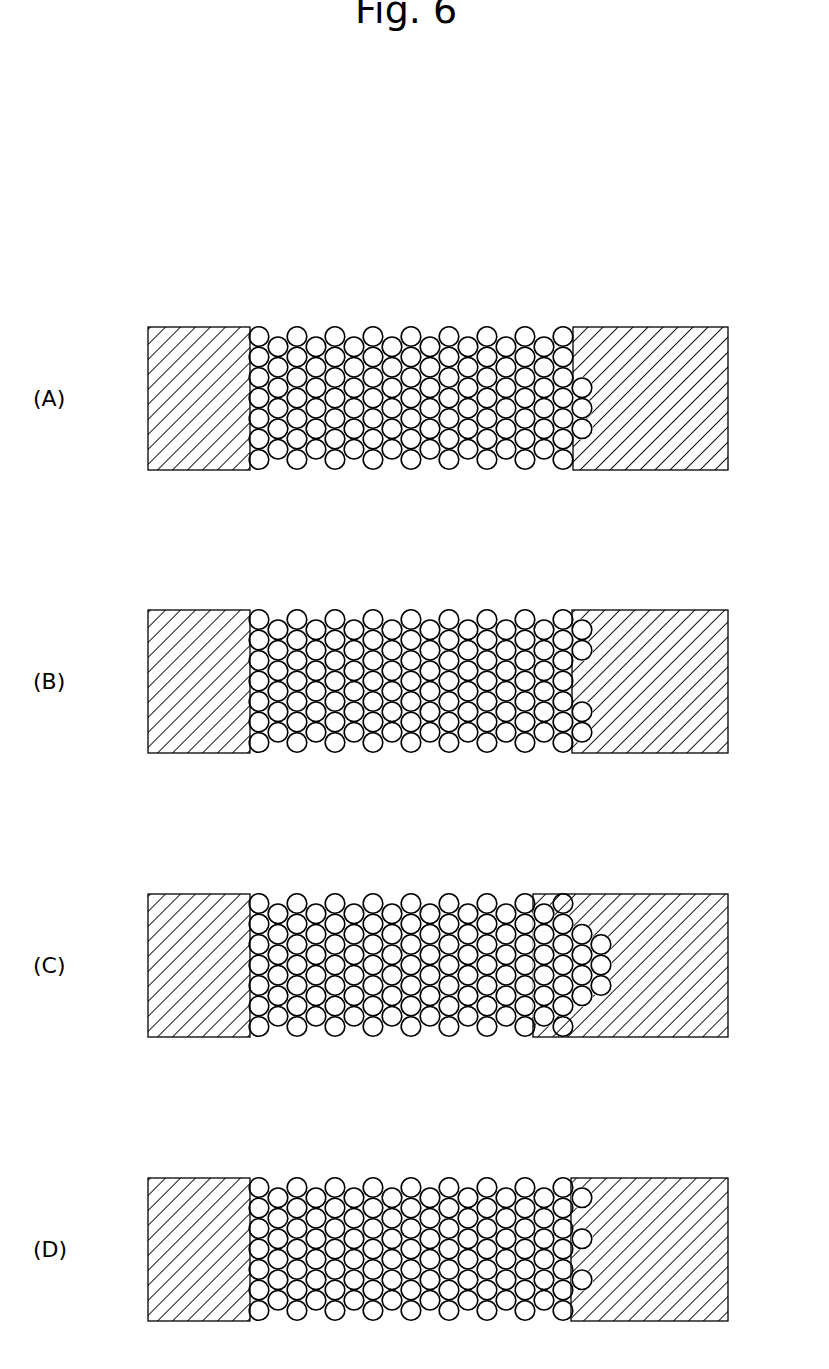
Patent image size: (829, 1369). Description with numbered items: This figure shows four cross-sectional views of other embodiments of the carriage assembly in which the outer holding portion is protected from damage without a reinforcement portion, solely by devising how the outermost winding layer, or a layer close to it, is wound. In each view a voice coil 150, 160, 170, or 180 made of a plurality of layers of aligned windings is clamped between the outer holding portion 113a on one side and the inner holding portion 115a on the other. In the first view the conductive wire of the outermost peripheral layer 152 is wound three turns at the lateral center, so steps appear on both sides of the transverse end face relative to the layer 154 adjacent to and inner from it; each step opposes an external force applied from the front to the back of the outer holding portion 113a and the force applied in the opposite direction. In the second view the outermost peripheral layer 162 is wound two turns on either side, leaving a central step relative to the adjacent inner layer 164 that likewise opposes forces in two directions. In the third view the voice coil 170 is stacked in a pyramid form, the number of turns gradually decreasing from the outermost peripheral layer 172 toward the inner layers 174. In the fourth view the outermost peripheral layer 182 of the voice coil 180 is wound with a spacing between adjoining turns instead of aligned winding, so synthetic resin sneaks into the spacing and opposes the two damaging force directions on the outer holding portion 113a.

The inner holding portion 115a is at (226, 771).
The outer holding portion 113a is at (656, 771).
The voice coil 150 is at (401, 345).
The outermost peripheral layer 152 is at (584, 365).
The layer adjacent to and inner from the outermost peripheral layer 154 is at (534, 345).
The voice coil 160 is at (401, 628).
The outermost peripheral layer 162 is at (582, 607).
The layer adjacent to and inner from the outermost peripheral layer 164 is at (534, 628).
The voice coil 170 is at (401, 912).
The outermost peripheral layer 172 is at (602, 927).
The inner layers 174 is at (534, 912).
The voice coil 180 is at (411, 1196).
The outermost peripheral layer 182 is at (583, 1180).